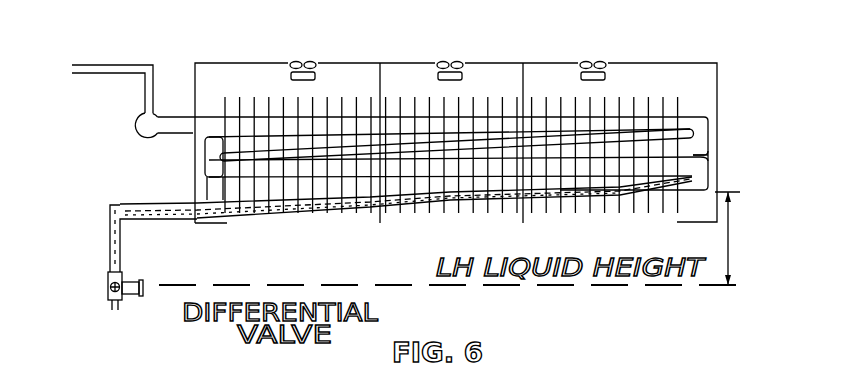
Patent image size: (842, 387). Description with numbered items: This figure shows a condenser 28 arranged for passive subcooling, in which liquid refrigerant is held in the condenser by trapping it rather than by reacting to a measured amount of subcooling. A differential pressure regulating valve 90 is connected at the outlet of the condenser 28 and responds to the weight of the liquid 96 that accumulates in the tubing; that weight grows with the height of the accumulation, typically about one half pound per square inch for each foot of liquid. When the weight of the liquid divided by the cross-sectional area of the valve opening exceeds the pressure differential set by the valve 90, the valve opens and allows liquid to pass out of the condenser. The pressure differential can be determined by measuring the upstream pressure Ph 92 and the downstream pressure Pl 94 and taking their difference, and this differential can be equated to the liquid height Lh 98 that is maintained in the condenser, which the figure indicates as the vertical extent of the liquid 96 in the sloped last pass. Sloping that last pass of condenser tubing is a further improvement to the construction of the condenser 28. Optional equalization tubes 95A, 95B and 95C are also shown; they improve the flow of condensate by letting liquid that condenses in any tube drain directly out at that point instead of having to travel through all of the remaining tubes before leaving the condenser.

The condenser 28 is at (394, 122).
The differential pressure regulating valve 90 is at (145, 287).
The pressure Ph 92 is at (112, 204).
The pressure Pl 94 is at (115, 306).
The equalization tube 95A is at (190, 135).
The equalization tube 95B is at (207, 192).
The equalization tube 95C is at (710, 157).
The liquid 96 is at (622, 196).
The liquid height Lh 98 is at (677, 250).